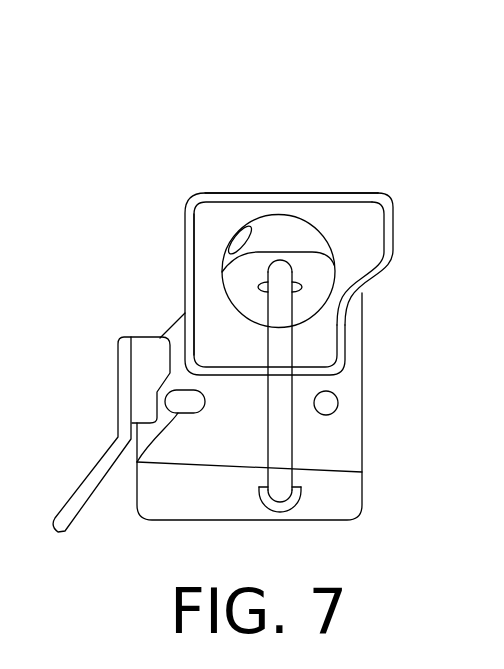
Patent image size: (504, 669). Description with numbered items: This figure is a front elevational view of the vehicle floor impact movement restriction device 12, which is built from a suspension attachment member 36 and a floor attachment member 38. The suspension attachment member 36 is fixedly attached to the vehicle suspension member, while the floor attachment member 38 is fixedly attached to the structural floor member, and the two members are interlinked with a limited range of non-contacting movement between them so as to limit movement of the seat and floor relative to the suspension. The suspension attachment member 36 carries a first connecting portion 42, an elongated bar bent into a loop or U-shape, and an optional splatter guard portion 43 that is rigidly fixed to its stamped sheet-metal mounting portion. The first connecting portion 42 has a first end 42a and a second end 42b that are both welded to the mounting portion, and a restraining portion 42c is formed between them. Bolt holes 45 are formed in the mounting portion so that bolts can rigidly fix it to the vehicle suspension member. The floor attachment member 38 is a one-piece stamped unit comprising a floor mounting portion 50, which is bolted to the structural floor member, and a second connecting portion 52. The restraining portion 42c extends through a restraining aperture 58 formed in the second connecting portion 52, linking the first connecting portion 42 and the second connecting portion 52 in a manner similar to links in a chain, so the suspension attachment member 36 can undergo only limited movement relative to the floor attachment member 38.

The vehicle floor impact movement restriction device 12 is at (154, 157).
The suspension attachment member 36 is at (375, 415).
The floor attachment member 38 is at (279, 181).
The first connecting portion 42 is at (305, 438).
The first end 42a is at (260, 497).
The second end 42b is at (260, 284).
The restraining portion 42c is at (278, 277).
The splatter guard portion 43 is at (103, 462).
The bolt holes 45 is at (337, 409).
The floor mounting portion 50 is at (243, 193).
The second connecting portion 52 is at (368, 247).
The restraining aperture 58 is at (210, 261).